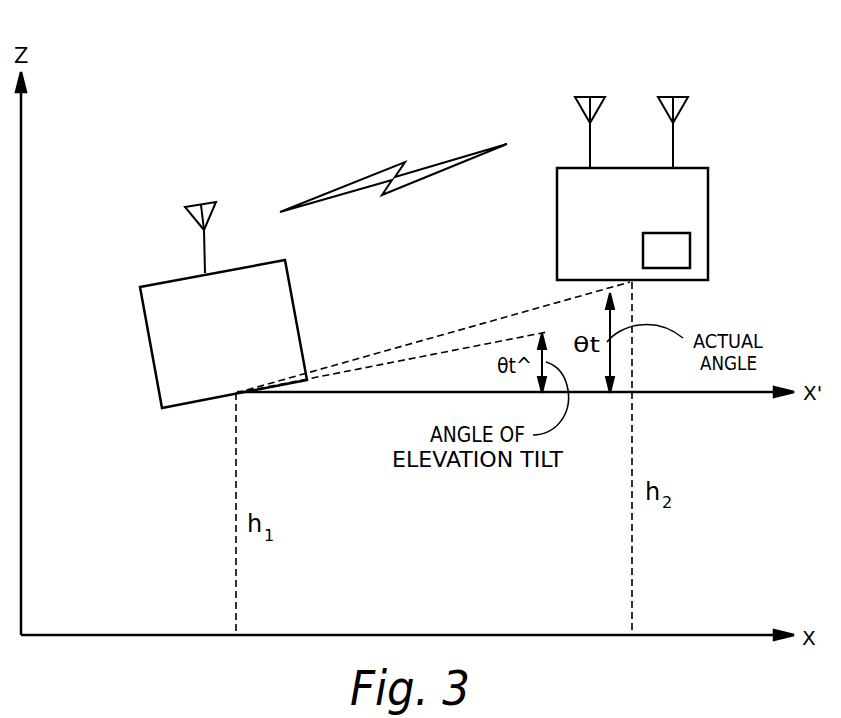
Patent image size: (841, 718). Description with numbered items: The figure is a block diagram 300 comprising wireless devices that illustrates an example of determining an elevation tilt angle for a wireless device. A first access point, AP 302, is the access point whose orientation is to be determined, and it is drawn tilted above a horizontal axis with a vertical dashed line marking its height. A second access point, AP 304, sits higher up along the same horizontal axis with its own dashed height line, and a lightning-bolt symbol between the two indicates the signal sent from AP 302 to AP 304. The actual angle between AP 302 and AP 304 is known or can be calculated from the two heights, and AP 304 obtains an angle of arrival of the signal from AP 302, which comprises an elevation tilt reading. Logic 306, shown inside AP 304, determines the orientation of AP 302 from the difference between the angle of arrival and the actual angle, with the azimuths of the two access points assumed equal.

The block diagram 300 is at (232, 112).
The AP 302 is at (163, 283).
The AP 304 is at (708, 203).
The logic 306 is at (690, 252).